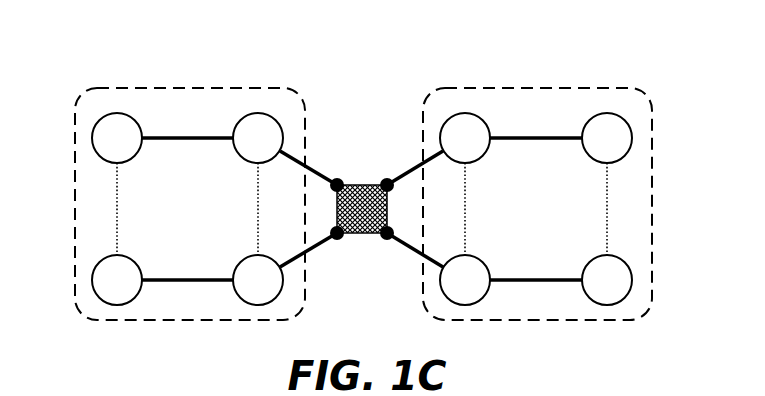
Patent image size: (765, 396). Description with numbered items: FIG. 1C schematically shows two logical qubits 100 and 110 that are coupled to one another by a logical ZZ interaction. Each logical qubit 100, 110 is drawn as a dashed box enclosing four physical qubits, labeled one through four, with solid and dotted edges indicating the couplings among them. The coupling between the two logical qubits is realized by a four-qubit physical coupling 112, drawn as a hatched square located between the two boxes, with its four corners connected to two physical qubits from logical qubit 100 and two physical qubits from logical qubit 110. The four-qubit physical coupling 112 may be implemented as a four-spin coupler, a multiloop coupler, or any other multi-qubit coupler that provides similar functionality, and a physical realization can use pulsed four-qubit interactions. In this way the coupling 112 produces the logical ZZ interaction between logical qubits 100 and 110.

The logical qubit 100 is at (265, 88).
The logical qubit 110 is at (453, 88).
The four-qubit physical coupling 112 is at (360, 183).